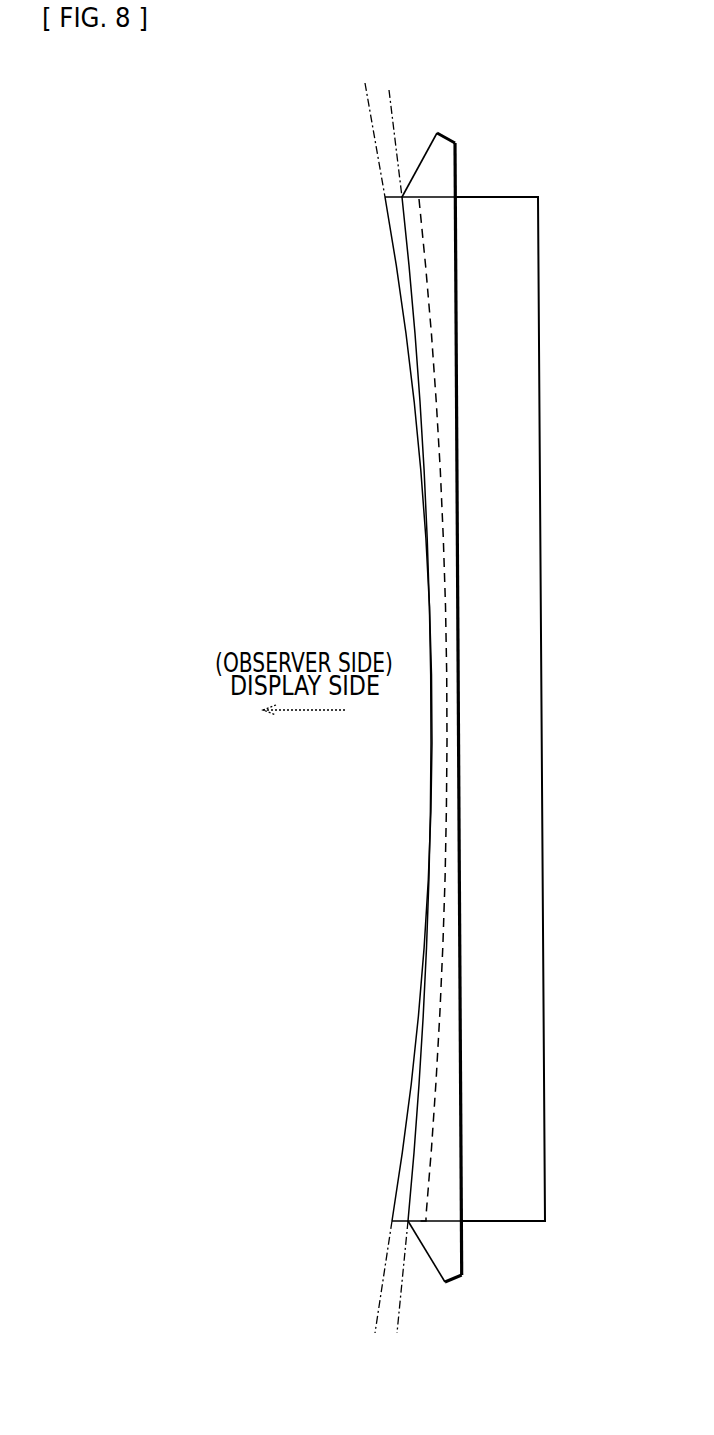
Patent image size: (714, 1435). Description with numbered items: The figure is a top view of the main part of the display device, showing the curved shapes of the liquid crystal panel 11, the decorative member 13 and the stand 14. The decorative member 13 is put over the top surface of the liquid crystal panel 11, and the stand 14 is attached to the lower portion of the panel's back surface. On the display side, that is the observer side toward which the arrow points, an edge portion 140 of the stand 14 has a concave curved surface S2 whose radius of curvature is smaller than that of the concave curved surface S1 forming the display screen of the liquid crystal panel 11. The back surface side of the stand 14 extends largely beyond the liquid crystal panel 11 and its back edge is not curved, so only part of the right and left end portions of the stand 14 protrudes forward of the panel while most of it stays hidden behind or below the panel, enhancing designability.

The liquid crystal panel 11 is at (425, 255).
The decorative member 13 is at (425, 152).
The stand 14 is at (494, 196).
The edge portion 140 is at (398, 288).
The concave curved surface S1 is at (392, 693).
The concave curved surface S2 is at (369, 693).